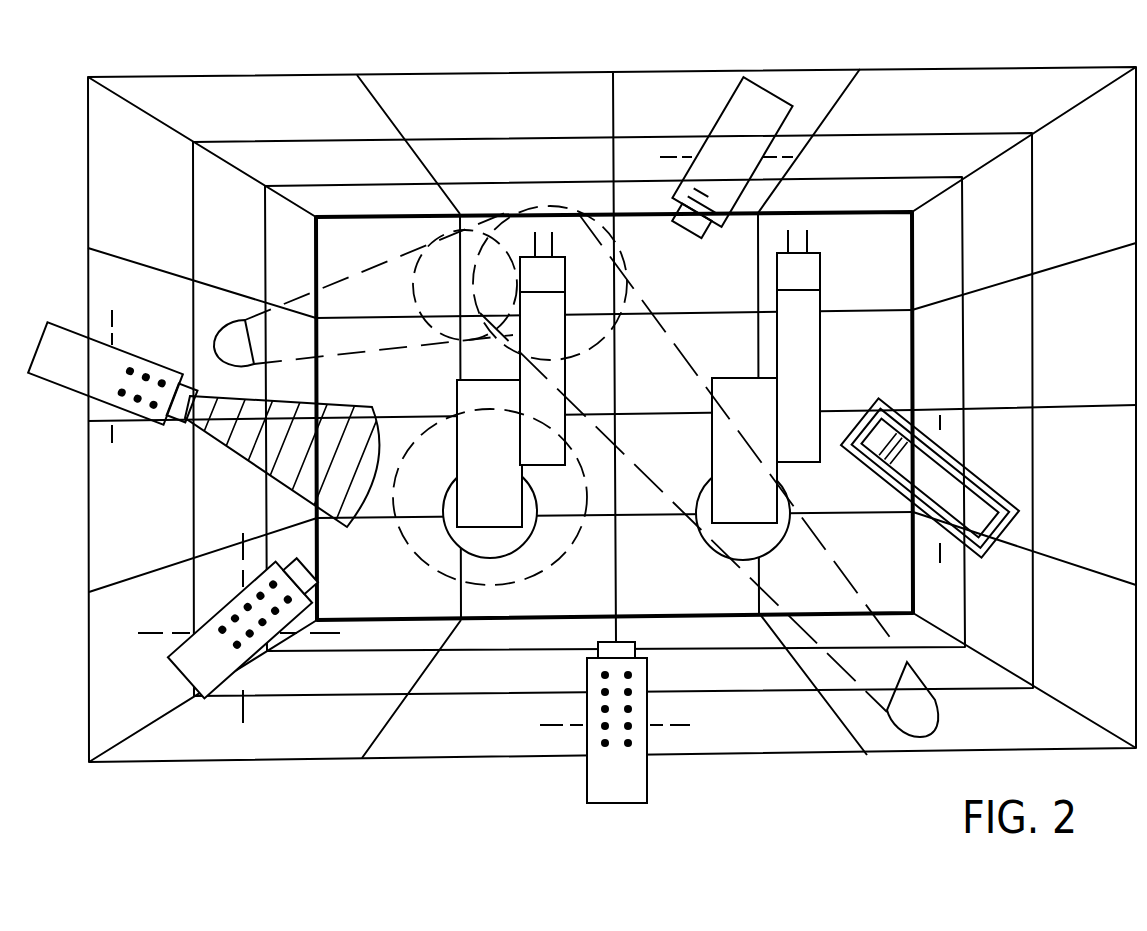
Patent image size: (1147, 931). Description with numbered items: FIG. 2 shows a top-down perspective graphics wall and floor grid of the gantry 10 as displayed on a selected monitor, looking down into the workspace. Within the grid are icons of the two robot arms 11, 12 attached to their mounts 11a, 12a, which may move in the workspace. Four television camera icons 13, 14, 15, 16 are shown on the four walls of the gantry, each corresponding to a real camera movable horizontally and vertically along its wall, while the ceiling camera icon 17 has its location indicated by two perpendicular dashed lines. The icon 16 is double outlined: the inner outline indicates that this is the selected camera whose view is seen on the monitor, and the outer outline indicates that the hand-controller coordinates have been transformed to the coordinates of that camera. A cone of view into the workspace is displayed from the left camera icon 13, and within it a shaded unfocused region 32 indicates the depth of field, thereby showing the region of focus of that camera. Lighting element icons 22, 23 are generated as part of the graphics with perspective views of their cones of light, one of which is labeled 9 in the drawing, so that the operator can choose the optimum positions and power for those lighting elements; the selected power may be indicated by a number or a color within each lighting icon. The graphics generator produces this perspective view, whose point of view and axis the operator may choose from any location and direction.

The gantry graphics 10 is at (980, 47).
The light beam path 9 is at (427, 395).
The robot arm icon 11 is at (568, 274).
The mount icon 11a is at (457, 505).
The robot arm icon 12 is at (820, 277).
The mount icon 12a is at (780, 525).
The left television camera icon 13 is at (70, 396).
The television camera icon 14 is at (722, 112).
The television camera icon 15 is at (647, 778).
The selected camera icon 16 is at (1000, 497).
The ceiling camera icon 17 is at (243, 680).
The lighting element icon 22 is at (230, 330).
The lighting element icon 23 is at (937, 697).
The unfocused region 32 is at (330, 400).